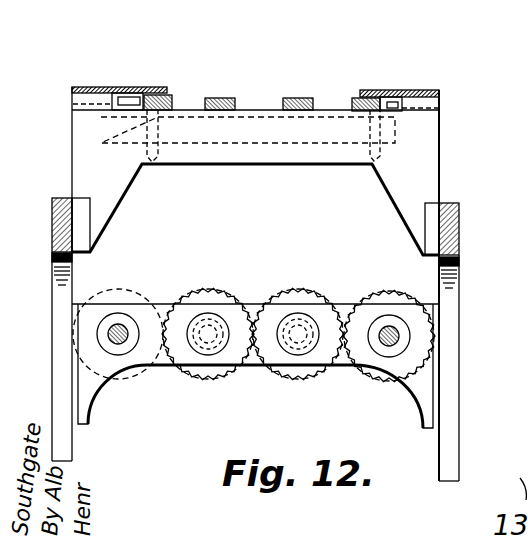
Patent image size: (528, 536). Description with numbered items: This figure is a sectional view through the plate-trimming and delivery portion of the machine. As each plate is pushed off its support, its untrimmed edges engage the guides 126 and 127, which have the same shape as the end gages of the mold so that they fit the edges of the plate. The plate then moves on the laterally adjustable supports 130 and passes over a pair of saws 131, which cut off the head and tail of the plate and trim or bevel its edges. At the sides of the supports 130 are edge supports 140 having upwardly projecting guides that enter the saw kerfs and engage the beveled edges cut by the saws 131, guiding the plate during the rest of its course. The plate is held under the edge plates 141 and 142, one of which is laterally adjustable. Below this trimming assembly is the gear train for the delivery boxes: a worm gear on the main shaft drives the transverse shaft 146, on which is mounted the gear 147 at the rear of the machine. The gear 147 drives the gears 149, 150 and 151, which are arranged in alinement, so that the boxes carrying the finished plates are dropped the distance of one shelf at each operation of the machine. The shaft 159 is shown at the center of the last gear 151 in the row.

The guide 126 is at (393, 112).
The guide 127 is at (133, 103).
The laterally adjustable support 130 is at (292, 98).
The saw 131 is at (152, 162).
The edge support 140 is at (170, 98).
The edge plate 141 is at (146, 96).
The edge plate 142 is at (388, 96).
The transverse shaft 146 is at (120, 336).
The gear 147 is at (118, 296).
The gear 149 is at (233, 275).
The gear 150 is at (308, 288).
The gear 151 is at (400, 278).
The shaft 159 is at (400, 340).